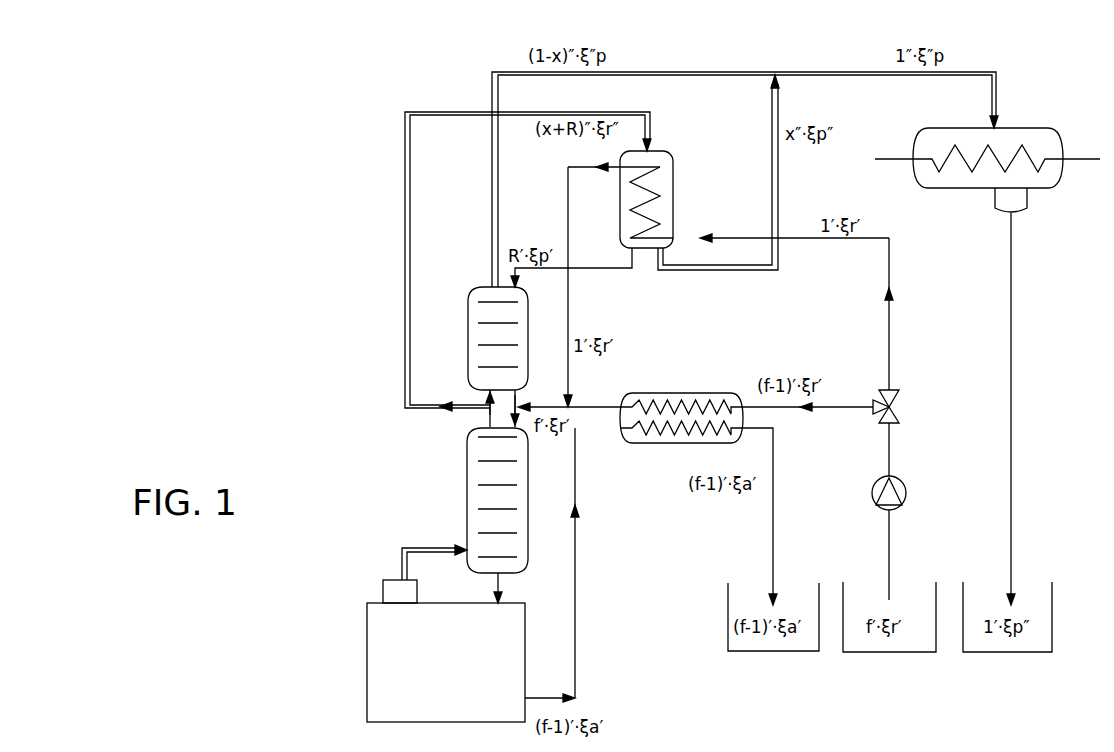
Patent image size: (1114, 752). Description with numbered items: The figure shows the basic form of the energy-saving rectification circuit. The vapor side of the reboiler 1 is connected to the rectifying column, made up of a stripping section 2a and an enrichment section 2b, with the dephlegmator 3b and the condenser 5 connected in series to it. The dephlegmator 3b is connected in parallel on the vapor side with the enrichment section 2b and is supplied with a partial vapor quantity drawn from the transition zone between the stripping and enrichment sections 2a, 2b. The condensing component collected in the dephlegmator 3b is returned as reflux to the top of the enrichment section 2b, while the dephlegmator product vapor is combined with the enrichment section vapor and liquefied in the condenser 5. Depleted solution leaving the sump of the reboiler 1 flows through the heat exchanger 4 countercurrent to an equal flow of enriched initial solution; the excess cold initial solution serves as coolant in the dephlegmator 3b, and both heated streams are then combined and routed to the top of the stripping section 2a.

The reboiler 1 is at (386, 672).
The stripping section of rectification device 2a is at (484, 493).
The enrichment section of rectification device 2b is at (483, 337).
The parallel-flow dephlegmator 3b is at (622, 188).
The heat exchanger 4 is at (648, 438).
The condenser 5 is at (945, 177).